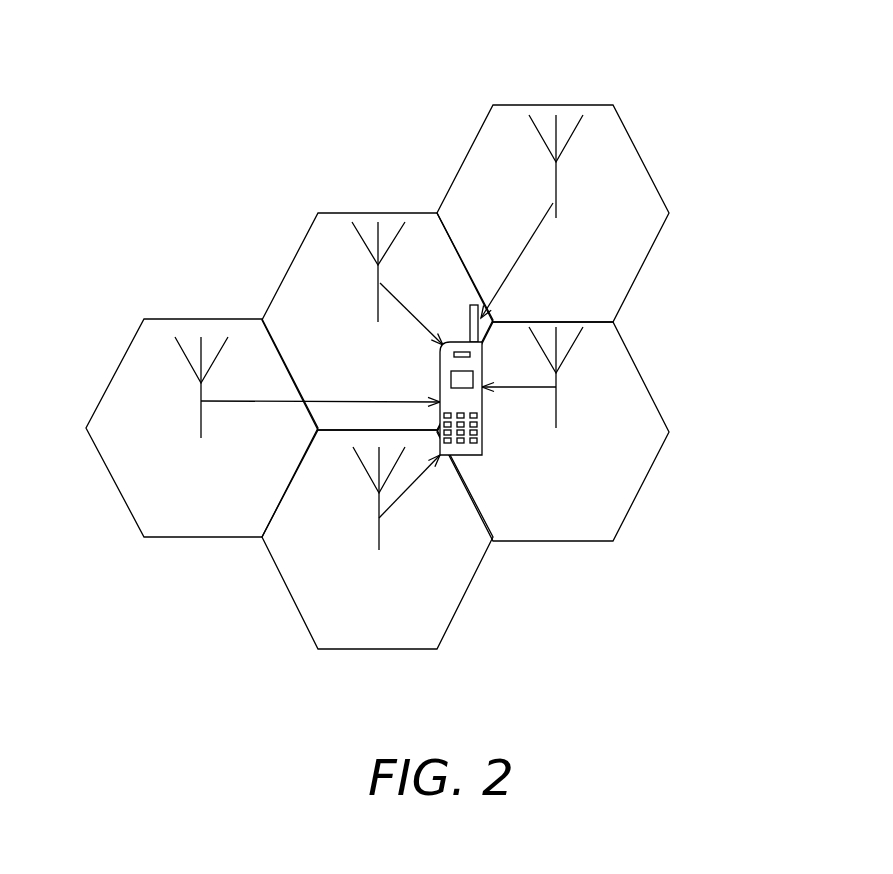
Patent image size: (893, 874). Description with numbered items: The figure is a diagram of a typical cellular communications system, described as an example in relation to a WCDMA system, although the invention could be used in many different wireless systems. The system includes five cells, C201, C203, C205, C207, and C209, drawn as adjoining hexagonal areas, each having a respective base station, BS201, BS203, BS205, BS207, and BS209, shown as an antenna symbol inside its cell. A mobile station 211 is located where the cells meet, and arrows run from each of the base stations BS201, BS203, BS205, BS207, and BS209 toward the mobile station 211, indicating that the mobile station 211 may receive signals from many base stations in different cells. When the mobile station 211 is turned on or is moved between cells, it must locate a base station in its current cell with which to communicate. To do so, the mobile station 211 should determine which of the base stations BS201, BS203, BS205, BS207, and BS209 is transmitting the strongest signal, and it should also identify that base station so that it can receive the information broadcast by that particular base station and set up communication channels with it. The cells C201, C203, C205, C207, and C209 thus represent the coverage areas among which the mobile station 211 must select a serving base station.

The cell C201 is at (540, 103).
The cell C203 is at (625, 343).
The cell C205 is at (477, 573).
The cell C207 is at (163, 317).
The cell C209 is at (363, 212).
The base station BS201 is at (556, 177).
The base station BS203 is at (556, 408).
The base station BS205 is at (379, 537).
The base station BS207 is at (201, 413).
The base station BS209 is at (378, 305).
The mobile station 211 is at (452, 456).